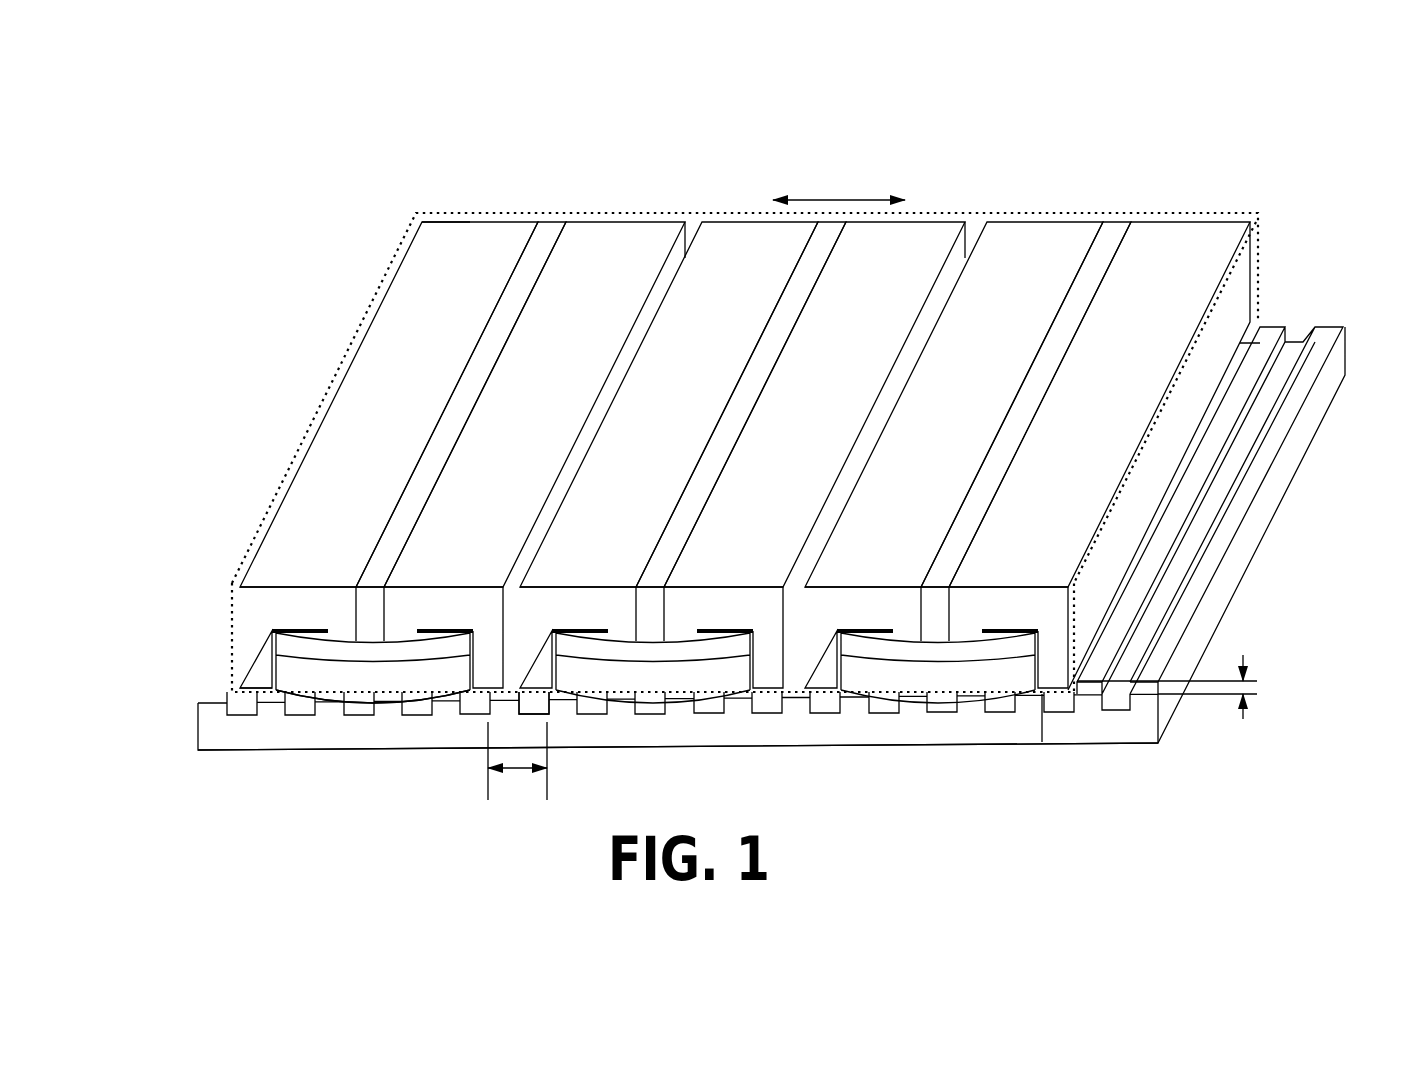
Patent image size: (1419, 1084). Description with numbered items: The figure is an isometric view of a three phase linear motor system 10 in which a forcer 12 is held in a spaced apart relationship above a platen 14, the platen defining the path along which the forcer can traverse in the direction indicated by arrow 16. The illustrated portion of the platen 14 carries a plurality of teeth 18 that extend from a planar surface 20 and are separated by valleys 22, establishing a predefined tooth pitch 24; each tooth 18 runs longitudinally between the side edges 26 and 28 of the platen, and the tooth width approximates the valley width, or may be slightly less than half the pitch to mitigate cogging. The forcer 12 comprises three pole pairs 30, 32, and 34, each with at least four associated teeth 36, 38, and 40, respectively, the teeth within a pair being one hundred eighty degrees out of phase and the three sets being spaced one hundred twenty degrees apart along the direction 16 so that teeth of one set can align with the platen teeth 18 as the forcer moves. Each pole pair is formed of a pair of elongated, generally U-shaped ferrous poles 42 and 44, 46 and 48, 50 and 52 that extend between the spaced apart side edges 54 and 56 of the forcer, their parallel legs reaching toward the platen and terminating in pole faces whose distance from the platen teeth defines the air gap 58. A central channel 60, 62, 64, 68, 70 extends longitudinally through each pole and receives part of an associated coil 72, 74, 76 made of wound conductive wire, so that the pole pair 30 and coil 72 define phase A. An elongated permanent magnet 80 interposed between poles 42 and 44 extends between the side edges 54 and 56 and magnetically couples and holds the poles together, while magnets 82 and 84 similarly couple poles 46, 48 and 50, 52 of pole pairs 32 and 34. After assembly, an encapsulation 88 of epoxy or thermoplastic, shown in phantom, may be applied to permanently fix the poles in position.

The three phase linear motor system 10 is at (1279, 150).
The forcer 12 is at (308, 444).
The platen 14 is at (198, 734).
The direction arrow 16 is at (828, 200).
The teeth 18 is at (385, 706).
The planar surface 20 is at (1113, 705).
The valleys 22 is at (826, 708).
The tooth pitch 24 is at (518, 770).
The side edge 26 is at (913, 730).
The side edge 28 is at (1348, 335).
The first pole pair 30 is at (516, 214).
The second pole pair 32 is at (940, 213).
The third pole pair 34 is at (1095, 213).
The teeth 36 is at (253, 680).
The teeth 38 is at (548, 706).
The teeth 40 is at (1057, 690).
The pole 42 is at (425, 378).
The pole 44 is at (564, 381).
The pole 46 is at (725, 381).
The pole 48 is at (857, 378).
The pole 50 is at (993, 378).
The pole 52 is at (1124, 383).
The side edge 54 is at (253, 610).
The side edge 56 is at (455, 218).
The air gap 58 is at (1245, 662).
The central channel 60 is at (273, 664).
The central channel 62 is at (440, 630).
The central channel 64 is at (565, 628).
The central channel 68 is at (843, 625).
The central channel 70 is at (993, 624).
The coil 72 is at (413, 690).
The coil 74 is at (677, 676).
The coil 76 is at (965, 680).
The permanent magnet 80 is at (405, 522).
The magnet 82 is at (683, 524).
The magnet 84 is at (960, 521).
The encapsulation 88 is at (1280, 258).